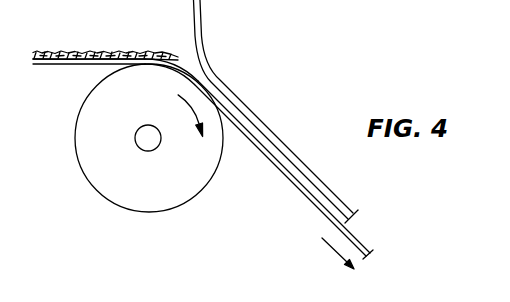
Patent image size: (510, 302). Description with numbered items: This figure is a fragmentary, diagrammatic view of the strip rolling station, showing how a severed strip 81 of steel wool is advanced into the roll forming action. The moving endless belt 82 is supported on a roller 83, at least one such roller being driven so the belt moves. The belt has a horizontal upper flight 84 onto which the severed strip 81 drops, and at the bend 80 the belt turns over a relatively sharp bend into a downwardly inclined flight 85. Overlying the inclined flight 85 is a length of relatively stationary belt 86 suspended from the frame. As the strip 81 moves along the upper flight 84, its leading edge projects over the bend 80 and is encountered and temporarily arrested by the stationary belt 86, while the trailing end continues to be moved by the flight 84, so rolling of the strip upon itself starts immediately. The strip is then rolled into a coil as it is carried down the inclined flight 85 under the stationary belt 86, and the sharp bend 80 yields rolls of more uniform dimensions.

The bend 80 is at (175, 68).
The severed strip 81 is at (104, 52).
The endless belt 82 is at (270, 170).
The roller 83 is at (159, 184).
The horizontal upper flight 84 is at (55, 65).
The downwardly inclined flight 85 is at (306, 201).
The stationary belt 86 is at (202, 40).